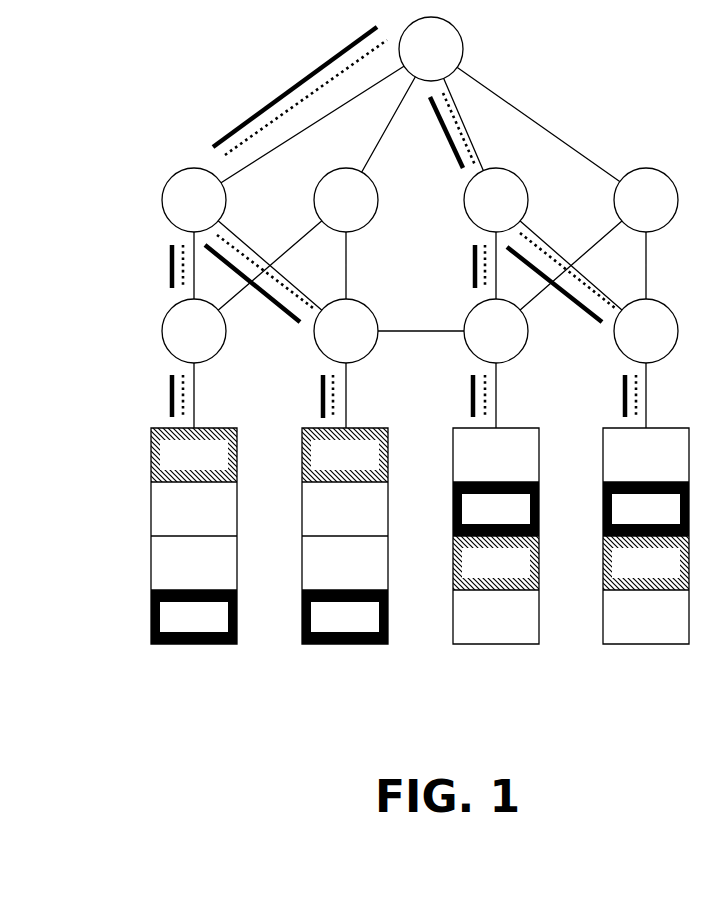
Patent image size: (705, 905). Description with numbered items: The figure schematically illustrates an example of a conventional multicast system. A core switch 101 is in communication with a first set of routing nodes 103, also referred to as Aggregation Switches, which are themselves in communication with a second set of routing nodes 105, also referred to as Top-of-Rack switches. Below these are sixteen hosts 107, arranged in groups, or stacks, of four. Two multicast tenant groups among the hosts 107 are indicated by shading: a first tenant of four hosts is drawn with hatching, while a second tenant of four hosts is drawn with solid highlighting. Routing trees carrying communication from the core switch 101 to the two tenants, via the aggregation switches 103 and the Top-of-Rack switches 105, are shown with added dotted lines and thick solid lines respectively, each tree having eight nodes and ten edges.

The core switch 101 is at (451, 40).
The first set of routing nodes 103 is at (108, 157).
The second set of routing nodes 105 is at (108, 288).
The hosts 107 is at (108, 408).